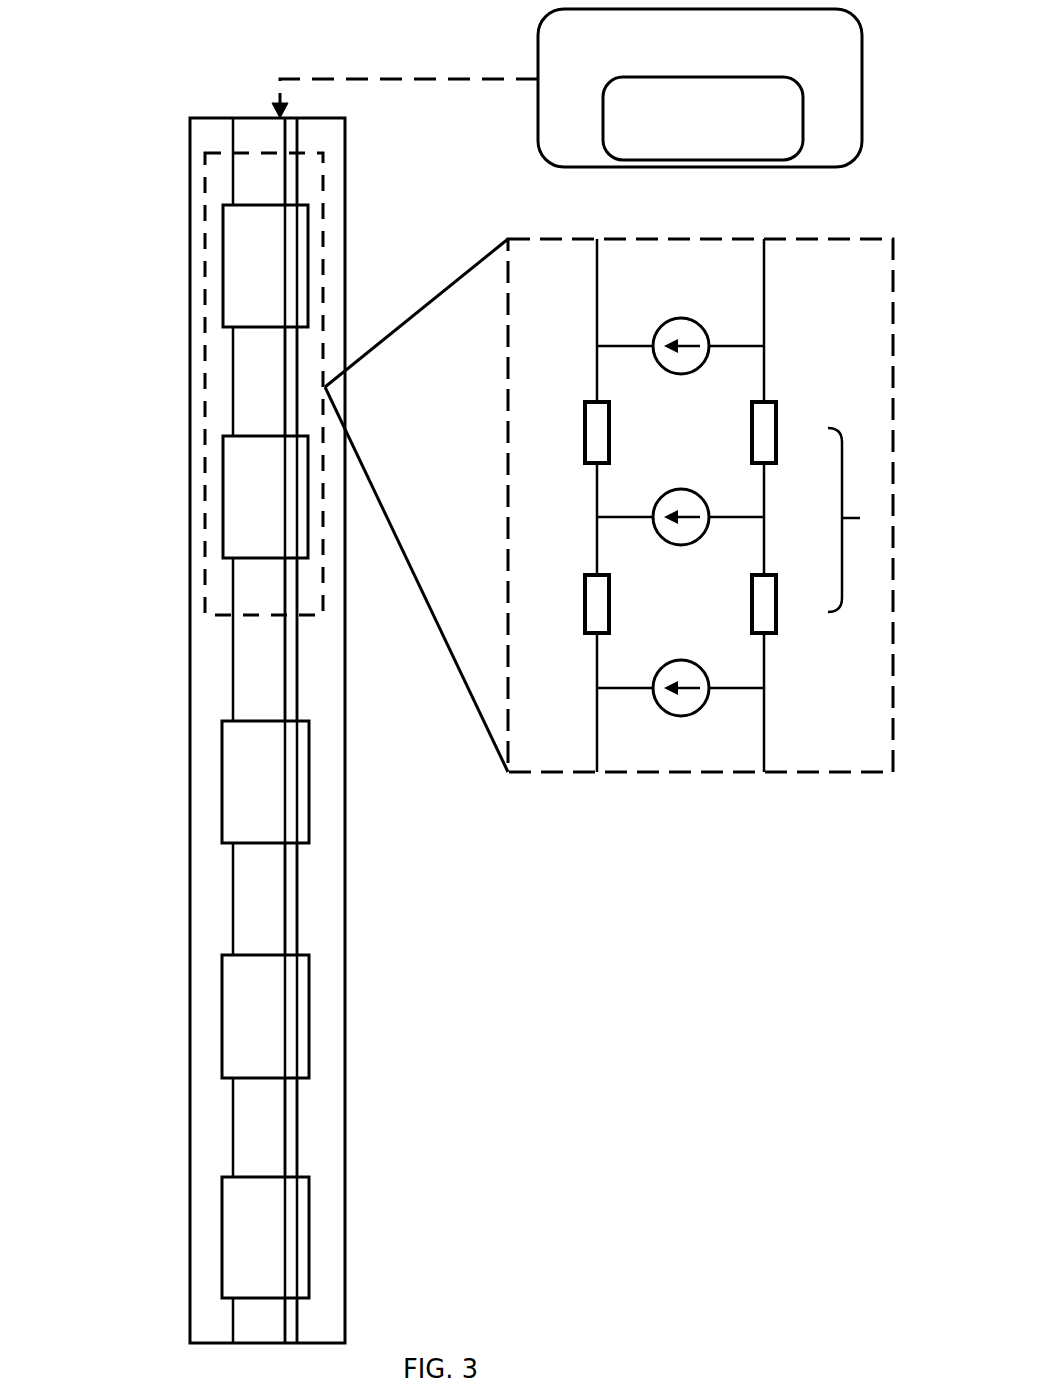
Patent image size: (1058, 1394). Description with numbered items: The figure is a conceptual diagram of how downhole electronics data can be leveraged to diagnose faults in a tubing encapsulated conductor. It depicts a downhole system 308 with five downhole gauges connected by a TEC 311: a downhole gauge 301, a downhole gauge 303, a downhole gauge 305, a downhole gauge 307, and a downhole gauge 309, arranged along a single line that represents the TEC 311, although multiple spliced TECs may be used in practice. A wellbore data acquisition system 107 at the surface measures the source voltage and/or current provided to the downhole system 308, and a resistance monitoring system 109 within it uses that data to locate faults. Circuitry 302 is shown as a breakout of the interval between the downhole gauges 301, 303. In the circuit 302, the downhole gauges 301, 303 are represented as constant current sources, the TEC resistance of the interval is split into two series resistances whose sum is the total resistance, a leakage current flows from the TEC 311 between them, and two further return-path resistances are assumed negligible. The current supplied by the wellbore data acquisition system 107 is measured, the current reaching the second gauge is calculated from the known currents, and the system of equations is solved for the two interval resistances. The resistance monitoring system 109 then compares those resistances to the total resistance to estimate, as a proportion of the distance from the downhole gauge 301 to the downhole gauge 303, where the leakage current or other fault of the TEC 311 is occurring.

The wellbore data acquisition system 107 is at (700, 88).
The resistance monitoring system 109 is at (703, 118).
The downhole gauge 301 is at (222, 265).
The circuitry 302 is at (540, 238).
The downhole gauge 303 is at (222, 503).
The downhole gauge 305 is at (222, 786).
The downhole gauge 307 is at (222, 1016).
The downhole system 308 is at (110, 164).
The downhole gauge 309 is at (222, 1237).
The TEC 311 is at (283, 181).